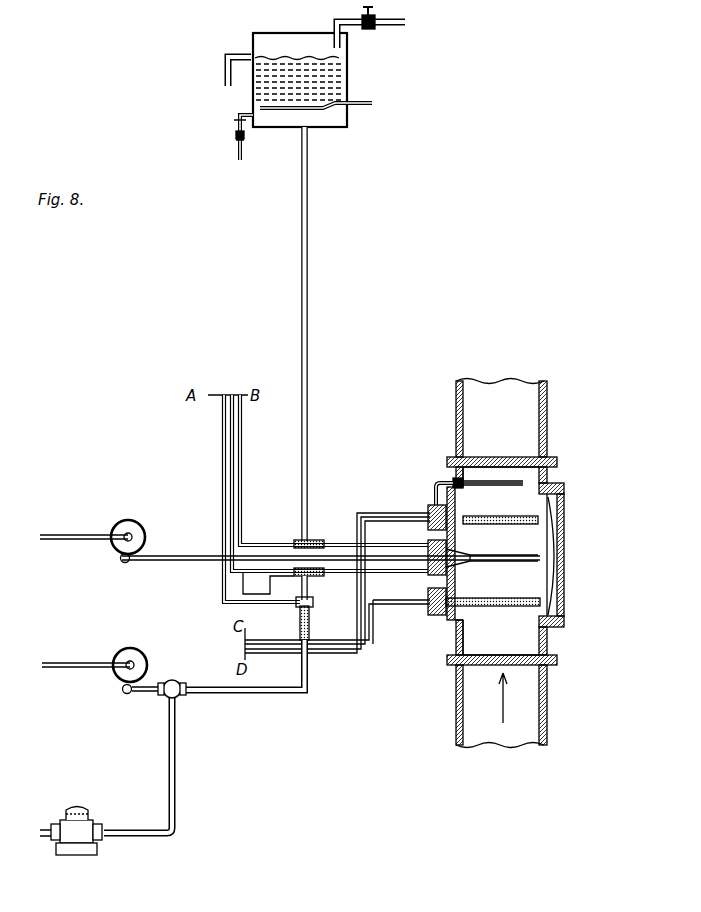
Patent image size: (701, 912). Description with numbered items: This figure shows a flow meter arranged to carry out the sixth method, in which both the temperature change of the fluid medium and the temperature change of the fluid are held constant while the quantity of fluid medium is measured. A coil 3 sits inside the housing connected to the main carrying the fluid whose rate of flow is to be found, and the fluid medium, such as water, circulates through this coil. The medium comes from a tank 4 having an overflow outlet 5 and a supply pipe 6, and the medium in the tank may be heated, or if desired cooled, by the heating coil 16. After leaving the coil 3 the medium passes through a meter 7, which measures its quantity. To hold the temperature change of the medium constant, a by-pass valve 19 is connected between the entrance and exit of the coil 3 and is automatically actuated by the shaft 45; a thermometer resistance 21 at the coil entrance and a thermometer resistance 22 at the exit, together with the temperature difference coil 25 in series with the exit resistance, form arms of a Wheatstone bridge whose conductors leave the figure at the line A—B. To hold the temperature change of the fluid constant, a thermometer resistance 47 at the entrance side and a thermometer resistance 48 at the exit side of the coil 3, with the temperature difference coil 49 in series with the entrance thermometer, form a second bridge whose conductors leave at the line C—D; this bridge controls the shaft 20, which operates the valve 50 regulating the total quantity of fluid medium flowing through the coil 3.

The coil 3 is at (560, 551).
The tank 4 is at (349, 80).
The overflow outlet 5 is at (224, 81).
The supply pipe 6 is at (389, 19).
The meter 7 is at (88, 826).
The heating coil 16 is at (333, 112).
The by-pass valve 19 is at (428, 556).
The shaft 20 is at (183, 556).
The thermometer resistance 21 is at (318, 541).
The thermometer resistance 22 is at (318, 578).
The temperature difference coil 25 is at (299, 628).
The shaft 45 is at (92, 539).
The thermometer resistance 47 is at (545, 600).
The thermometer resistance 48 is at (503, 516).
The temperature difference coil 49 is at (500, 481).
The valve 50 is at (178, 683).